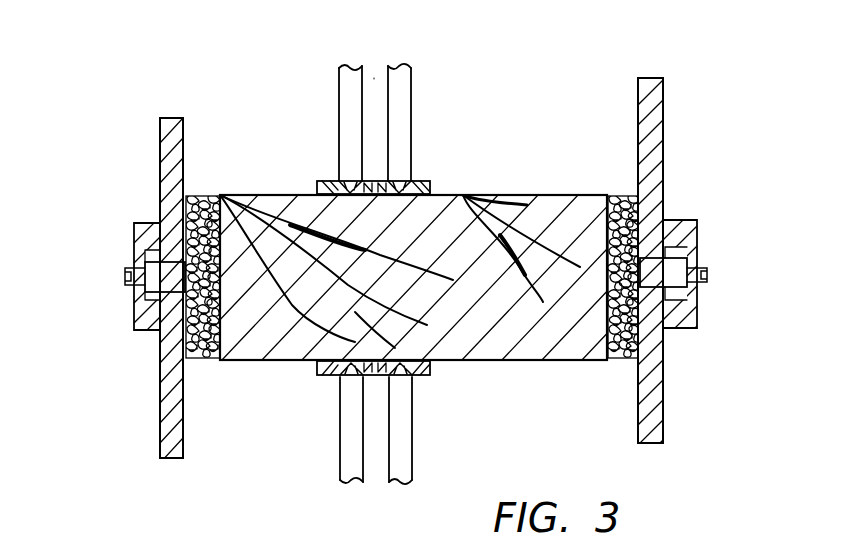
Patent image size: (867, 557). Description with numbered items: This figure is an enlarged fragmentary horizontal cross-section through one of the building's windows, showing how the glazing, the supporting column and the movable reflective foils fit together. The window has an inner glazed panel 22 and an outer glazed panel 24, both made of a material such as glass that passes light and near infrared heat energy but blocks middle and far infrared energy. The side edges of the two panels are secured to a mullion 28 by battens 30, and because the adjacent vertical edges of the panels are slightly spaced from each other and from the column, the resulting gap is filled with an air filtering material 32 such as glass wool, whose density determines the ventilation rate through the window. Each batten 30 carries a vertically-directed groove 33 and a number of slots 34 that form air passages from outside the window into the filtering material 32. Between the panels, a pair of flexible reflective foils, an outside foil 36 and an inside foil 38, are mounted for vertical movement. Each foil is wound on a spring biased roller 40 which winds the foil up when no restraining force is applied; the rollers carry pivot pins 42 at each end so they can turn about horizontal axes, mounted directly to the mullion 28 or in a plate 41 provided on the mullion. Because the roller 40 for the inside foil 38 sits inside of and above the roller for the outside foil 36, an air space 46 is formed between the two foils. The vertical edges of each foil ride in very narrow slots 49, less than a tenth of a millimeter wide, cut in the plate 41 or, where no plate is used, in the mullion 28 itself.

The inner glazed panel 22 is at (663, 160).
The outer glazed panel 24 is at (159, 140).
The mullion 28 is at (571, 194).
The batten 30 is at (134, 228).
The air filtering material 32 is at (203, 360).
The vertically-directed groove 33 is at (155, 280).
The slots 34 is at (150, 258).
The outside foil 36 is at (351, 92).
The inside foil 38 is at (397, 90).
The spring biased roller 40 is at (349, 65).
The plate 41 is at (318, 182).
The pivot pins 42 is at (337, 182).
The air space 46 is at (374, 78).
The slots 49 is at (370, 181).